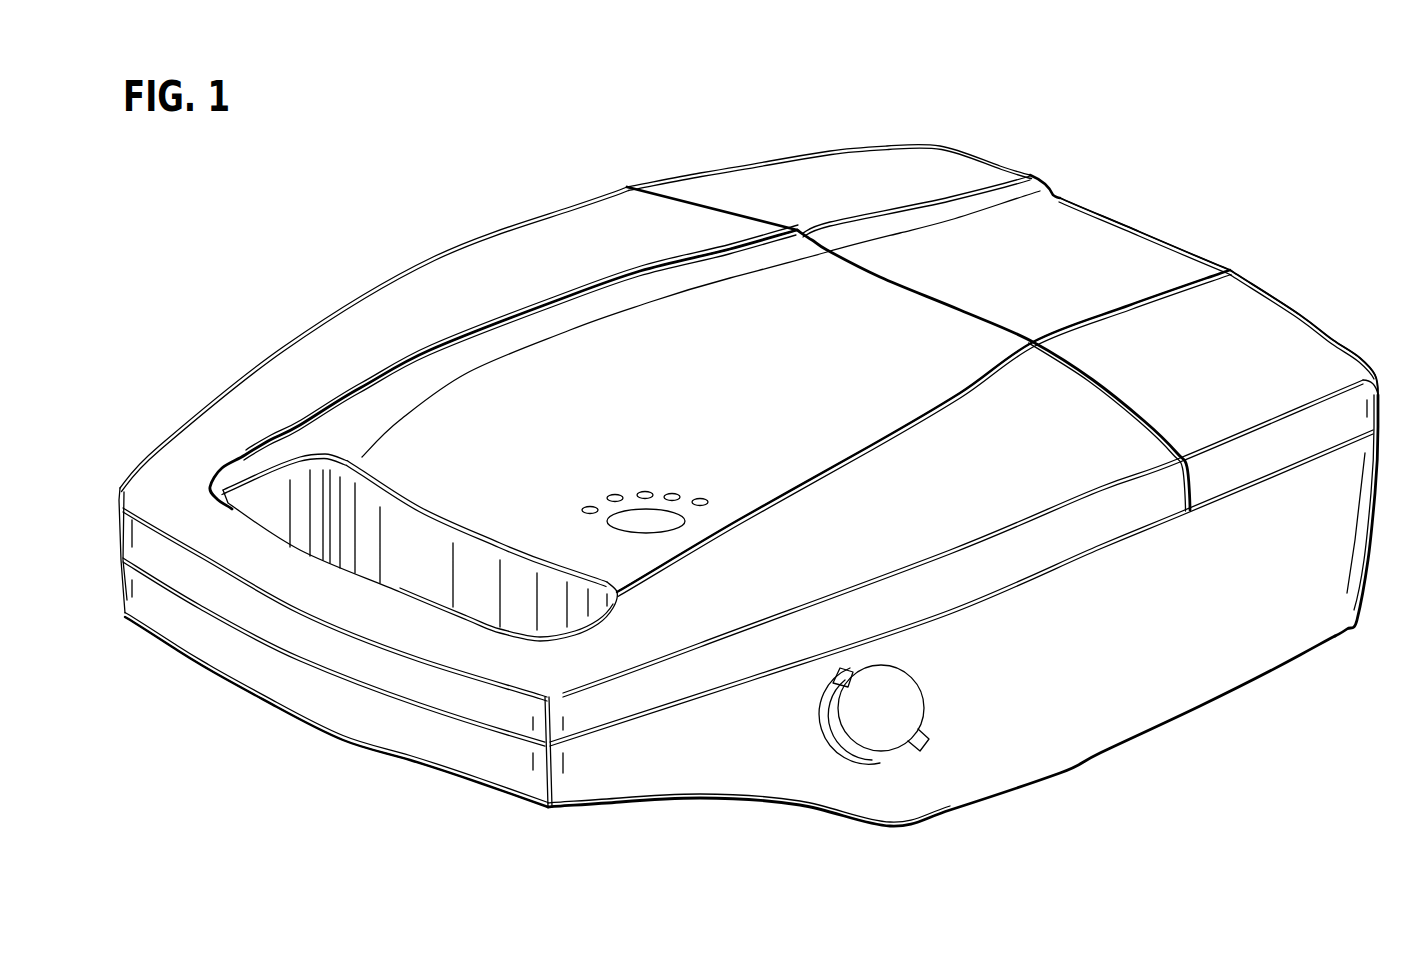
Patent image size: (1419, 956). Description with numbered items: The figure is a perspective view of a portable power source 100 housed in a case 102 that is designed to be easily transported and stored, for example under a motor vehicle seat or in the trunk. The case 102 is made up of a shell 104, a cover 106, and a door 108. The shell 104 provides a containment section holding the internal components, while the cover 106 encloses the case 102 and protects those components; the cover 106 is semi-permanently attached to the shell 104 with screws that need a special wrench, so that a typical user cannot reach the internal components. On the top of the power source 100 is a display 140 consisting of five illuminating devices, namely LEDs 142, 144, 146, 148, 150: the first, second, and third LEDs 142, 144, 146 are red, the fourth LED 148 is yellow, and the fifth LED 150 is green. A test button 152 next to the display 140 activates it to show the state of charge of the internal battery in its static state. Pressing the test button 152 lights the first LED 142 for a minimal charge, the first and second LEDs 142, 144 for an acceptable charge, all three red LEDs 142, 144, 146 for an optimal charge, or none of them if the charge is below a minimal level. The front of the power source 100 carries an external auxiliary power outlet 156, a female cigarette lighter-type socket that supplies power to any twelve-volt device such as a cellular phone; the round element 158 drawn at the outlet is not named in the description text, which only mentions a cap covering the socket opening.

The portable power source 100 is at (1184, 144).
The case 102 is at (1059, 779).
The shell 104 is at (345, 718).
The cover 106 is at (945, 507).
The door 108 is at (1233, 370).
The display 140 is at (641, 460).
The first LED 142 is at (707, 502).
The second LED 144 is at (677, 493).
The third LED 146 is at (646, 490).
The fourth LED 148 is at (611, 492).
The fifth LED 150 is at (581, 508).
The test button 152 is at (638, 530).
The external auxiliary power outlet 156 is at (858, 758).
The knob 158 is at (915, 707).